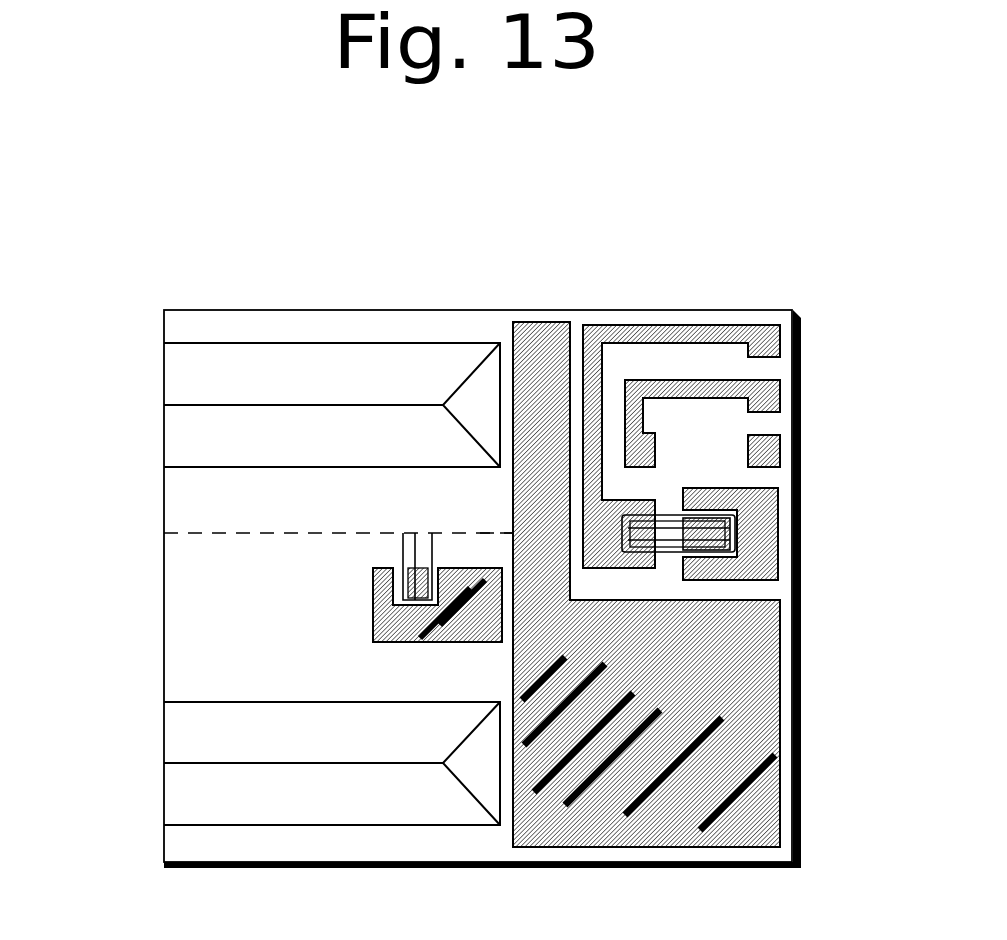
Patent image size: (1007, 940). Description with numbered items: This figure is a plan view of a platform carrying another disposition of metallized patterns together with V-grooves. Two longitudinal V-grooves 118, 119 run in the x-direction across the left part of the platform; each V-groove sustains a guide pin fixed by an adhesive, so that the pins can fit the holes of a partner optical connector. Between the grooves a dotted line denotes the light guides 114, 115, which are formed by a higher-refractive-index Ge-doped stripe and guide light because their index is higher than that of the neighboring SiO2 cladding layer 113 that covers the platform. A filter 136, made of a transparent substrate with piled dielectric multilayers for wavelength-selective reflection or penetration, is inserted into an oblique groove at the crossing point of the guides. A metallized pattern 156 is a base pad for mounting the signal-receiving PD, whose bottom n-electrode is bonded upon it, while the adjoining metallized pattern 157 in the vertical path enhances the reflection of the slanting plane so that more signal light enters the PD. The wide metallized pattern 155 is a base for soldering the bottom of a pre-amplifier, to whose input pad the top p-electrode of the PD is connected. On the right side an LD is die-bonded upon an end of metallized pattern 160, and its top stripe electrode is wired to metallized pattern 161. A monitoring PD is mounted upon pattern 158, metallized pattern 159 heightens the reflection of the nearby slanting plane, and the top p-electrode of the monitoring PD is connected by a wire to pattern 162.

The SiO2 cladding layer 113 is at (195, 648).
The light guide 114 is at (208, 535).
The light guide 115 is at (491, 531).
The V-groove 118 is at (196, 372).
The V-groove 119 is at (205, 752).
The filter 136 is at (442, 557).
The metallized pattern 155 is at (633, 835).
The metallized pattern 156 is at (432, 630).
The metallized pattern 157 is at (393, 588).
The pattern 158 is at (778, 572).
The metallized pattern 159 is at (778, 516).
The metallized pattern 160 is at (772, 326).
The metallized pattern 161 is at (780, 396).
The pattern 162 is at (780, 446).